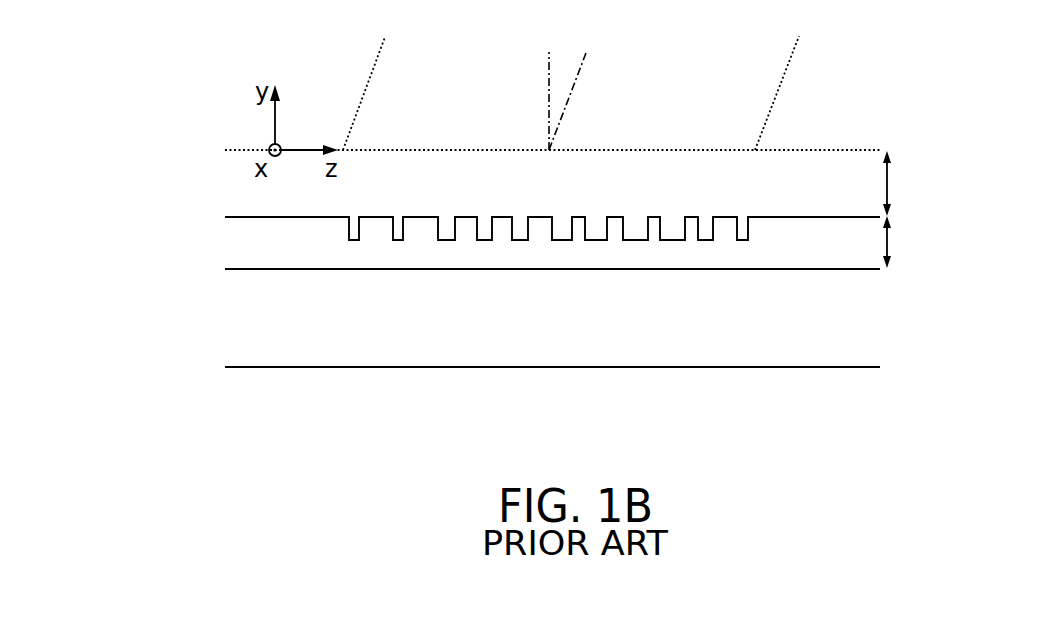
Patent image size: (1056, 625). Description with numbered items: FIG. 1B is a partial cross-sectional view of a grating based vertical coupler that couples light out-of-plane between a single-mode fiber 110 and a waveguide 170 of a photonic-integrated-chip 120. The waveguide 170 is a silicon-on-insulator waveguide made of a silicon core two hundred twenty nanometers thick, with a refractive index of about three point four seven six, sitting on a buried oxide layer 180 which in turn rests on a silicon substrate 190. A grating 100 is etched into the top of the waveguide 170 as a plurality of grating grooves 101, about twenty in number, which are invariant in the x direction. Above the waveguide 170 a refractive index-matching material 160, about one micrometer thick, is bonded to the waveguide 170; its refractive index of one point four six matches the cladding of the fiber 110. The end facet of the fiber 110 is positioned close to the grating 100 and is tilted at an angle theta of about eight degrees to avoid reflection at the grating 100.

The grating 100 is at (508, 260).
The grating grooves 101 is at (380, 216).
The single-mode fiber 110 is at (692, 67).
The photonic-integrated-chip 120 is at (239, 405).
The refractive index-matching material 160 is at (935, 164).
The waveguide 170 is at (949, 224).
The buried oxide layer 180 is at (900, 307).
The silicon substrate 190 is at (900, 394).